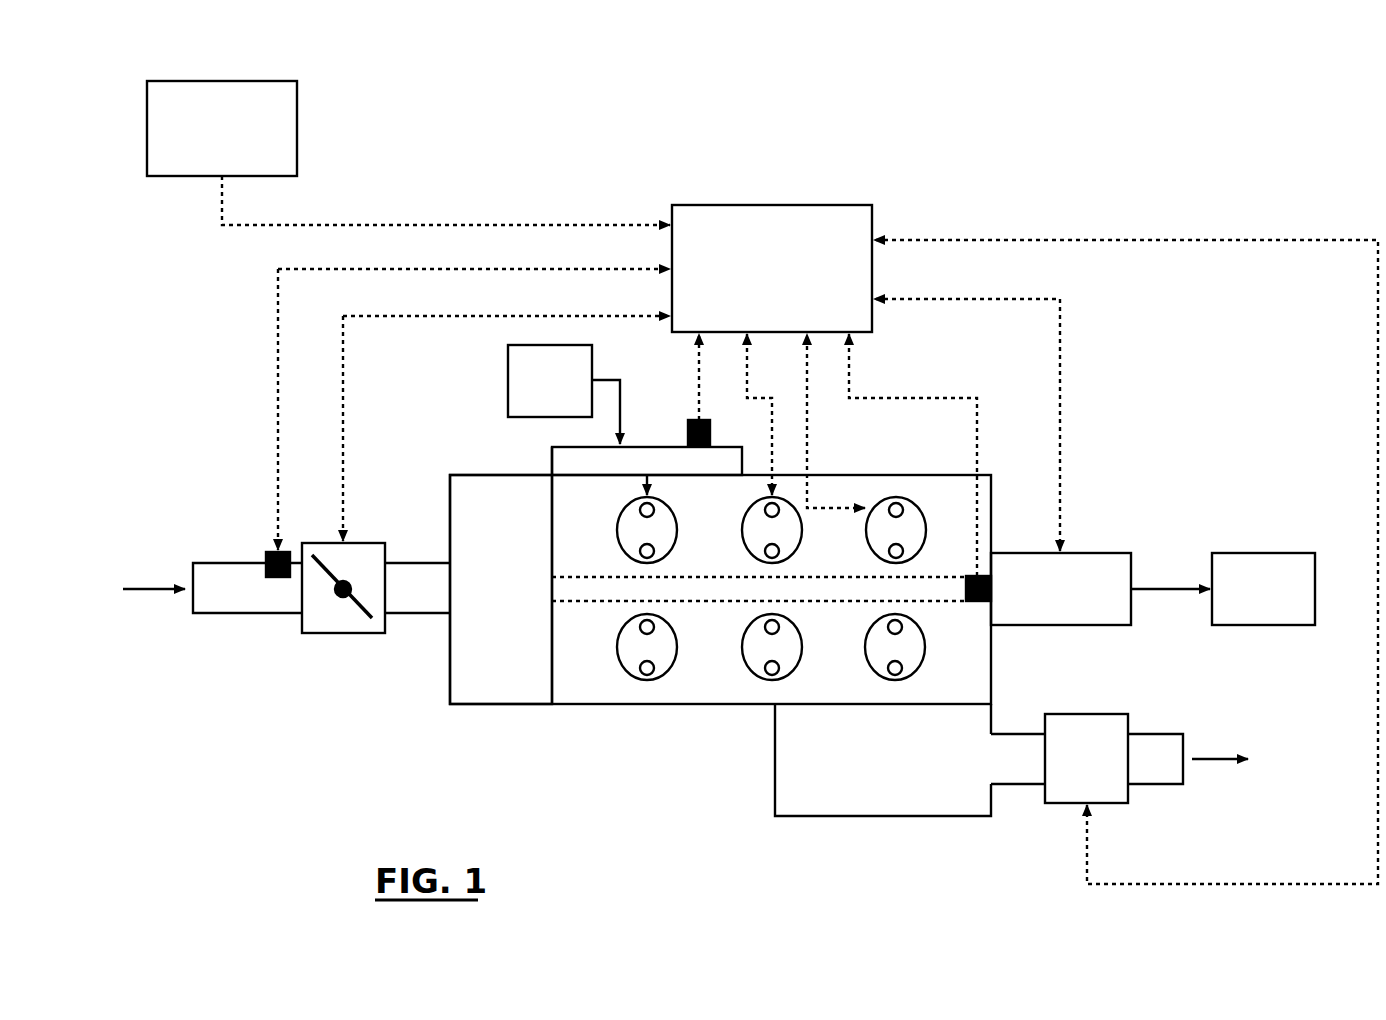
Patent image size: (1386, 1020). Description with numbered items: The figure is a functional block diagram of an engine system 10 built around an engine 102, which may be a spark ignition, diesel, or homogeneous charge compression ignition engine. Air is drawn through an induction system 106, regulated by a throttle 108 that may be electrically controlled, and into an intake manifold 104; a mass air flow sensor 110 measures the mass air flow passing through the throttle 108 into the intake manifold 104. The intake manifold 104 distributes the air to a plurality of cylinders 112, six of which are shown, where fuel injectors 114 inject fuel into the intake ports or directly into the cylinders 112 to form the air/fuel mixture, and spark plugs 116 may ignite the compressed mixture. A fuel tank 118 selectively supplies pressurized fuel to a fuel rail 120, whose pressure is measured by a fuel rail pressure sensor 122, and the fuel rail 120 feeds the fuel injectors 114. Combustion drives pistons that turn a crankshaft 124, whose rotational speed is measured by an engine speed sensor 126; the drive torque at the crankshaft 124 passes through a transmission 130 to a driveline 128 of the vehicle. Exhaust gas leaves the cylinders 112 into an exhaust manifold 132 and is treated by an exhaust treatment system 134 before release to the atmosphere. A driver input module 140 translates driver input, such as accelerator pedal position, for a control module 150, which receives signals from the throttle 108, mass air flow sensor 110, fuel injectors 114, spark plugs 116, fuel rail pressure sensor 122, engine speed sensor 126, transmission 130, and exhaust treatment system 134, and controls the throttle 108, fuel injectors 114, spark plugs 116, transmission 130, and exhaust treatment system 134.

The engine system 10 is at (1142, 153).
The engine 102 is at (598, 704).
The intake manifold 104 is at (500, 704).
The induction system 106 is at (220, 563).
The throttle 108 is at (343, 633).
The mass air flow sensor 110 is at (278, 577).
The cylinders 112 is at (660, 680).
The fuel injectors 114 is at (640, 632).
The spark plugs 116 is at (892, 668).
The fuel tank 118 is at (508, 380).
The fuel rail 120 is at (552, 460).
The fuel rail pressure sensor 122 is at (699, 420).
The crankshaft 124 is at (759, 589).
The engine speed sensor 126 is at (975, 601).
The driveline 128 is at (1262, 553).
The transmission 130 is at (1060, 625).
The exhaust manifold 132 is at (885, 816).
The exhaust treatment system 134 is at (1065, 803).
The driver input module 140 is at (220, 81).
The control module 150 is at (775, 205).